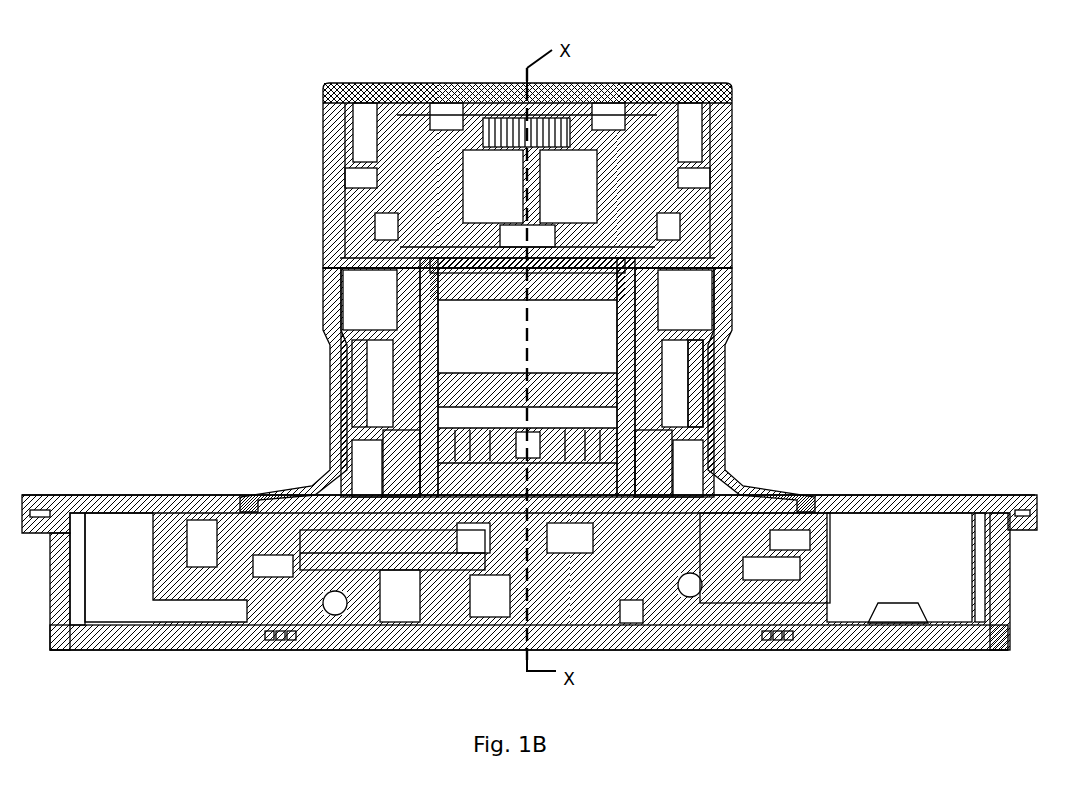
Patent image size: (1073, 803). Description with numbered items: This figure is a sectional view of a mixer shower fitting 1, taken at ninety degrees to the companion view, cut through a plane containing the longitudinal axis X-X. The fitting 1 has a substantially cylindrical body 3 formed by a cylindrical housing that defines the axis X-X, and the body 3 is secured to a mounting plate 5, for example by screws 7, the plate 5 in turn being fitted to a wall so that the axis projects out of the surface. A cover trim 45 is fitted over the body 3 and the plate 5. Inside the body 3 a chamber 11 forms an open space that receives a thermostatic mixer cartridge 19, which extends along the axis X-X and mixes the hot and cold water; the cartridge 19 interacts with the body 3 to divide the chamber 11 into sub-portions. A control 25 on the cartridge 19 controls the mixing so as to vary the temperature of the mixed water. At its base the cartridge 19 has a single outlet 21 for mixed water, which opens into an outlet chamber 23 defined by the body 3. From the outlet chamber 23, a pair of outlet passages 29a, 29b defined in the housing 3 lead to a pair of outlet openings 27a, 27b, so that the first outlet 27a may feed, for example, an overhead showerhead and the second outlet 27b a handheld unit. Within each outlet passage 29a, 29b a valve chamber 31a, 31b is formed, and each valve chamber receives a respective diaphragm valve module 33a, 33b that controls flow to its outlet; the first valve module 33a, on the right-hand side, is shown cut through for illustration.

The mixer shower fitting 1 is at (875, 77).
The body 3 is at (653, 309).
The mounting plate 5 is at (857, 638).
The screws 7 is at (277, 618).
The chamber 11 is at (430, 300).
The thermostatic mixer cartridge 19 is at (585, 305).
The outlet 21 is at (487, 528).
The outlet chamber 23 is at (553, 555).
The control 25 is at (640, 90).
The first outlet opening 27a is at (700, 388).
The second outlet opening 27b is at (372, 392).
The first outlet passage 29a is at (658, 457).
The second outlet passage 29b is at (400, 456).
The first valve chamber 31a is at (718, 545).
The second valve chamber 31b is at (335, 545).
The first diaphragm valve module 33a is at (677, 593).
The second diaphragm valve module 33b is at (357, 597).
The cover trim 45 is at (325, 294).